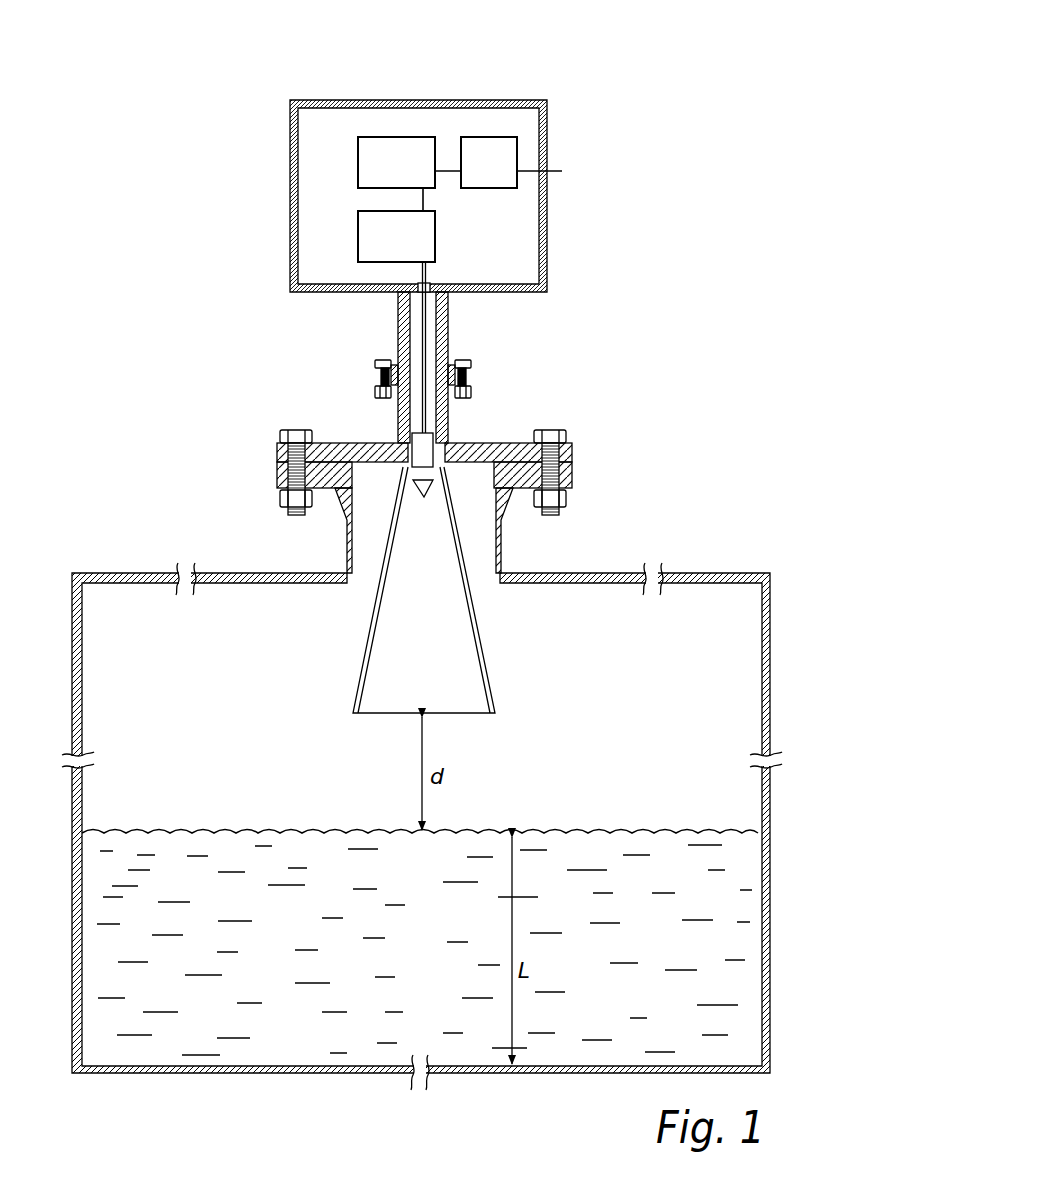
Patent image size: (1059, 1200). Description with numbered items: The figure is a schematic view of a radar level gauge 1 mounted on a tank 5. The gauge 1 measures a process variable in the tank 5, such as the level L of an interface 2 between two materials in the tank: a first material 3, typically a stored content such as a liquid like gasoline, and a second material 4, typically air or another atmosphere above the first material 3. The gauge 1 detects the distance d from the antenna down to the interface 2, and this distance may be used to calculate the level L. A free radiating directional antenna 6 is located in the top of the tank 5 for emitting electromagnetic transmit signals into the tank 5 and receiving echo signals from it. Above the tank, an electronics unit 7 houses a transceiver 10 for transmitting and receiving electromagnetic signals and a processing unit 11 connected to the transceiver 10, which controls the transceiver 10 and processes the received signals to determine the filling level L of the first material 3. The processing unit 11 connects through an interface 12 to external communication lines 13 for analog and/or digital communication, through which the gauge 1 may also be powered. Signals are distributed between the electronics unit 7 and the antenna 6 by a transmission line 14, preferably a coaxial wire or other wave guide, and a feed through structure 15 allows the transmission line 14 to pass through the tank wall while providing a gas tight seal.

The radar level gauge 1 is at (652, 79).
The interface 2 is at (203, 833).
The first material 3 is at (279, 968).
The second material 4 is at (258, 706).
The tank 5 is at (577, 573).
The free radiating directional antenna 6 is at (484, 650).
The electronics unit 7 is at (344, 100).
The transceiver 10 is at (436, 237).
The processing unit 11 is at (358, 163).
The interface 12 is at (490, 137).
The external communication lines 13 is at (555, 174).
The transmission line 14 is at (415, 271).
The feed through structure 15 is at (434, 278).